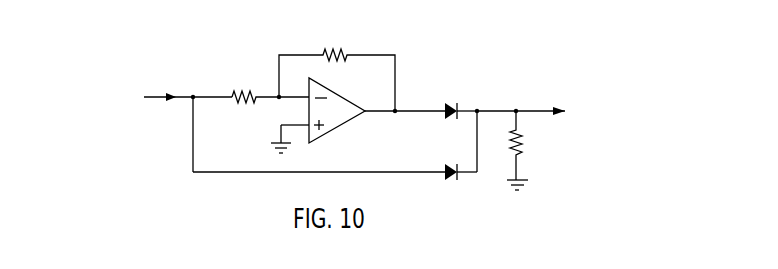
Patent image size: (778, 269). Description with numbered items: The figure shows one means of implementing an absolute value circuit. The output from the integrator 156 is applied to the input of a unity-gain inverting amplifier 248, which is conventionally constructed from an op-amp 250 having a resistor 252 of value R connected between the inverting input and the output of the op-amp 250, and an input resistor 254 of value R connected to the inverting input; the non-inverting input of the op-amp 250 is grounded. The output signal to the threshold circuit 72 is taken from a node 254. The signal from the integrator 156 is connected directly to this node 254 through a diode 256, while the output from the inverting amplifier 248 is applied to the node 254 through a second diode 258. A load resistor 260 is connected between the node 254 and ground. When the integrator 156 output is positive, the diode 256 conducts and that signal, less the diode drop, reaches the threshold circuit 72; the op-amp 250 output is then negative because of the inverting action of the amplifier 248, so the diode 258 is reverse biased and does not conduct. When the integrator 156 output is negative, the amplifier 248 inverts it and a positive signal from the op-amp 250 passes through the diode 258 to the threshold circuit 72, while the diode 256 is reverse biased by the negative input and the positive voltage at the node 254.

The integrator 156 is at (131, 97).
The unity-gain inverting amplifier 248 is at (305, 38).
The op-amp 250 is at (345, 120).
The resistor 252 is at (347, 47).
The input resistor / node 254 is at (250, 104).
The diode 256 is at (453, 180).
The second diode 258 is at (450, 106).
The load resistor 260 is at (523, 145).
The threshold circuit 72 is at (594, 123).